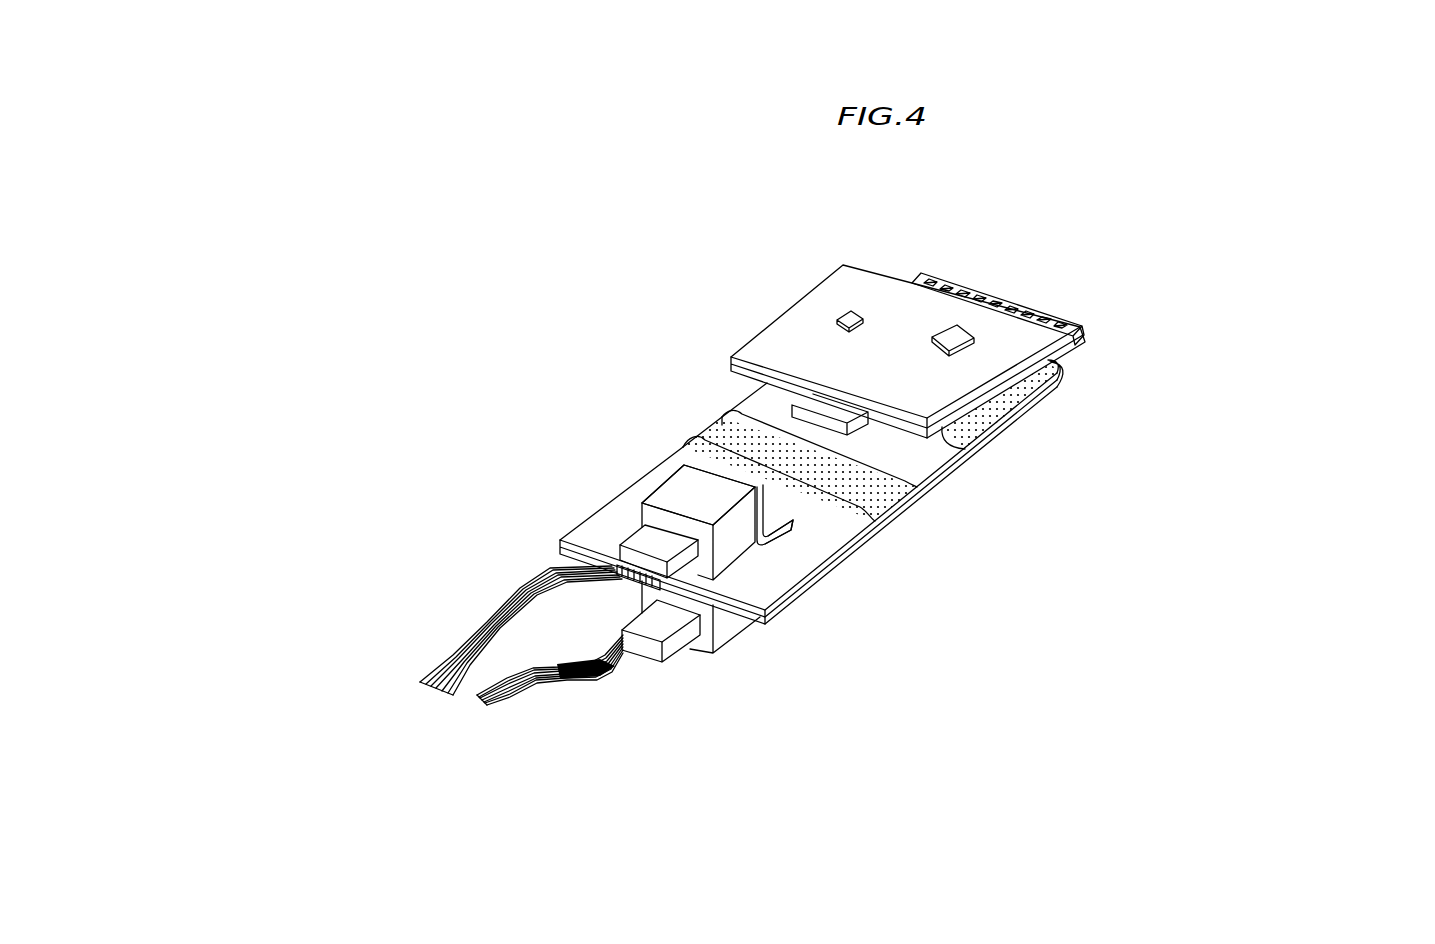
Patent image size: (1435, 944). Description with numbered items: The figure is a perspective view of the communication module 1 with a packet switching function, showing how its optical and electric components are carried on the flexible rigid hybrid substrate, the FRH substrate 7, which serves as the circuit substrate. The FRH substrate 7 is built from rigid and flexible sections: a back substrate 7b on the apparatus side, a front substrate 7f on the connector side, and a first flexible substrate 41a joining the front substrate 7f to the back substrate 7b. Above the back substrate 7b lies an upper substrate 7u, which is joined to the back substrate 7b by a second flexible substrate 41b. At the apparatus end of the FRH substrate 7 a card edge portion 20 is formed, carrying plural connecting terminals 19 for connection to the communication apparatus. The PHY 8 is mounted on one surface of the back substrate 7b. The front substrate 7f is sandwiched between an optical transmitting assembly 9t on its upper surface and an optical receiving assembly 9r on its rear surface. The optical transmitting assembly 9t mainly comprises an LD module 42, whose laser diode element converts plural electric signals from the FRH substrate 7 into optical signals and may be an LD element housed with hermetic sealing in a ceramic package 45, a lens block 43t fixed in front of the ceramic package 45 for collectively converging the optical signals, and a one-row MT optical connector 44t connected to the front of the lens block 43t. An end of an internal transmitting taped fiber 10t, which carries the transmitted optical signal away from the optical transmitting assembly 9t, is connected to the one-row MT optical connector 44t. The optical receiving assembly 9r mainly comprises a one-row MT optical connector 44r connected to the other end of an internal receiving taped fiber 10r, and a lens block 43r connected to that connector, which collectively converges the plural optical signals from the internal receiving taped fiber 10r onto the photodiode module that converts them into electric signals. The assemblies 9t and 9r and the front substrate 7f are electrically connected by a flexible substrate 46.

The communication module 1 is at (486, 314).
The FRH substrate 7 is at (1041, 408).
The front substrate 7f is at (855, 548).
The back substrate 7b is at (950, 493).
The upper substrate 7u is at (781, 309).
The first flexible substrate 41a is at (887, 514).
The second flexible substrate 41b is at (1003, 437).
The connecting terminal 19 is at (908, 283).
The card edge portion 20 is at (1011, 301).
The PHY 8 is at (808, 398).
The optical transmitting assembly 9t is at (659, 476).
The ceramic package 45 is at (682, 458).
The lens block 43t is at (650, 516).
The one-row MT optical connector 44t is at (642, 548).
The internal transmitting taped fiber 10t is at (499, 598).
The LD module 42 is at (763, 552).
The flexible substrate 46 is at (788, 528).
The optical receiving assembly 9r is at (729, 651).
The lens block 43r is at (702, 650).
The one-row MT optical connector 44r is at (675, 655).
The internal receiving taped fiber 10r is at (525, 700).